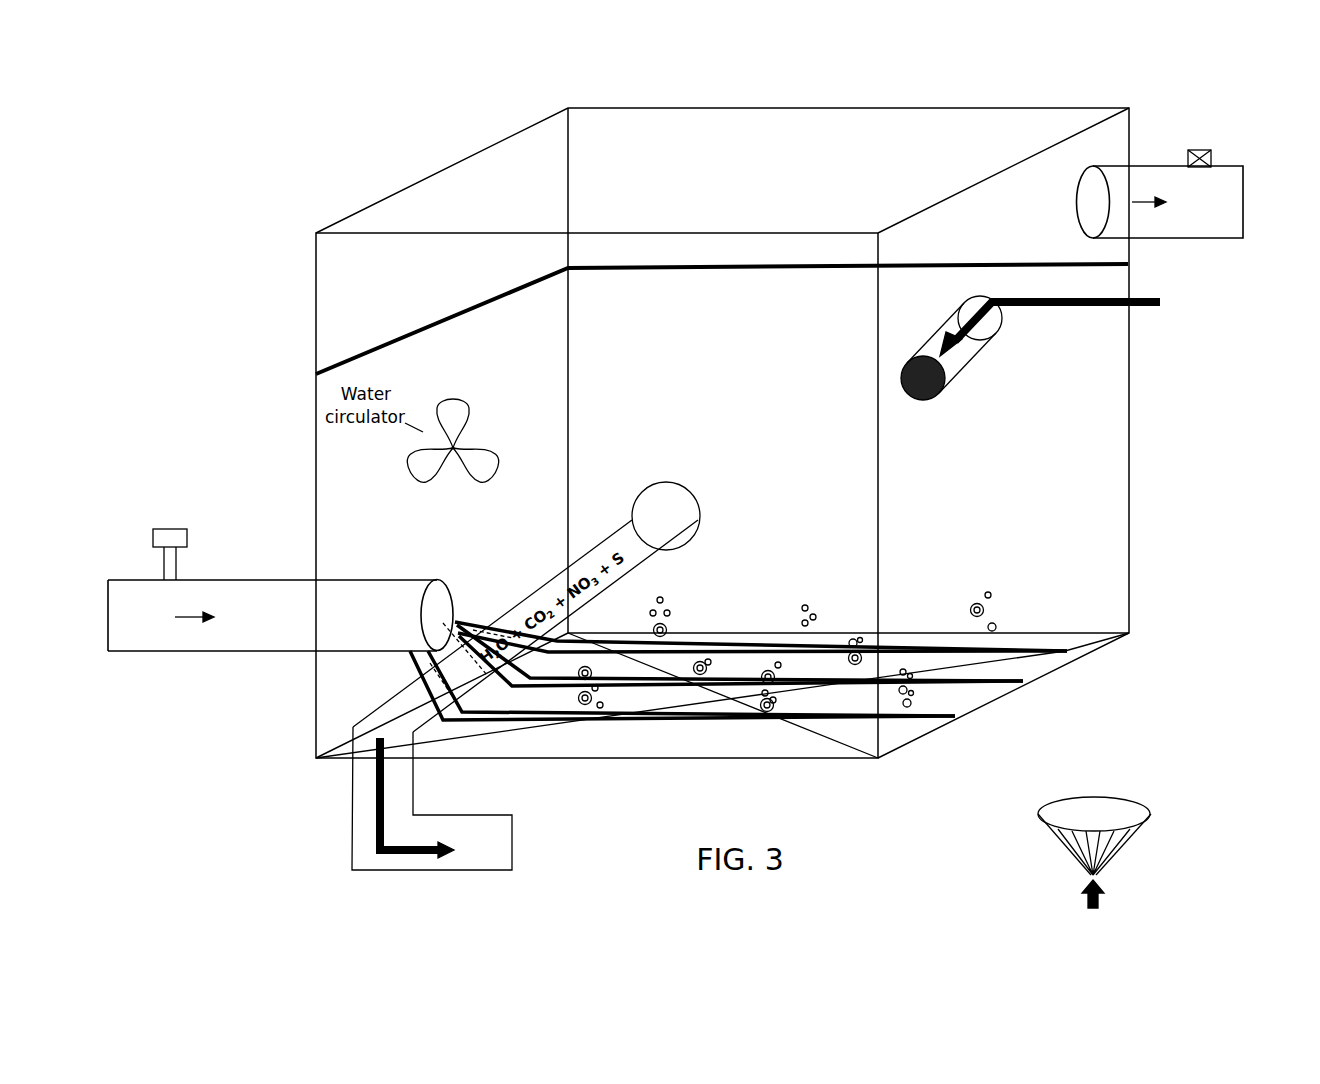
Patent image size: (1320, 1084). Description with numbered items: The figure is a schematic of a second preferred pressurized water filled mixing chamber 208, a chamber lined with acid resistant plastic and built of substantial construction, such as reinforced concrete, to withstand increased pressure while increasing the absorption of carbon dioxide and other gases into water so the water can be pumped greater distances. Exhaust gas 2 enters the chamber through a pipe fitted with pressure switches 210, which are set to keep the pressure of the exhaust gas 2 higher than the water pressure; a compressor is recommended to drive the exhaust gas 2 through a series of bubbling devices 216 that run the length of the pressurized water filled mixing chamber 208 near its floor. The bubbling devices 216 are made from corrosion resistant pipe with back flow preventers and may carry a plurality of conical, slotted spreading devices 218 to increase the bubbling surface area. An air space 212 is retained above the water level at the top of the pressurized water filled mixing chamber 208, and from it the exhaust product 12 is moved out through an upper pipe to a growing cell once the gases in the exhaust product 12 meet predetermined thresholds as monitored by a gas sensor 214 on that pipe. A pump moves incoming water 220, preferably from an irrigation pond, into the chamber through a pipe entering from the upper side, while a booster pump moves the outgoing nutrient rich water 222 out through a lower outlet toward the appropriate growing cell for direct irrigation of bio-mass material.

The exhaust gas 2 is at (237, 656).
The exhaust product 12 is at (1237, 161).
The pressurized water filled mixing chamber 208 is at (367, 188).
The pressure switches 210 is at (172, 522).
The air space 212 is at (333, 287).
The gas sensor 214 is at (1203, 141).
The bubbling devices 216 is at (1070, 652).
The conical, slotted spreading devices 218 is at (965, 748).
The incoming water 220 is at (1055, 346).
The outgoing nutrient rich water 222 is at (413, 790).